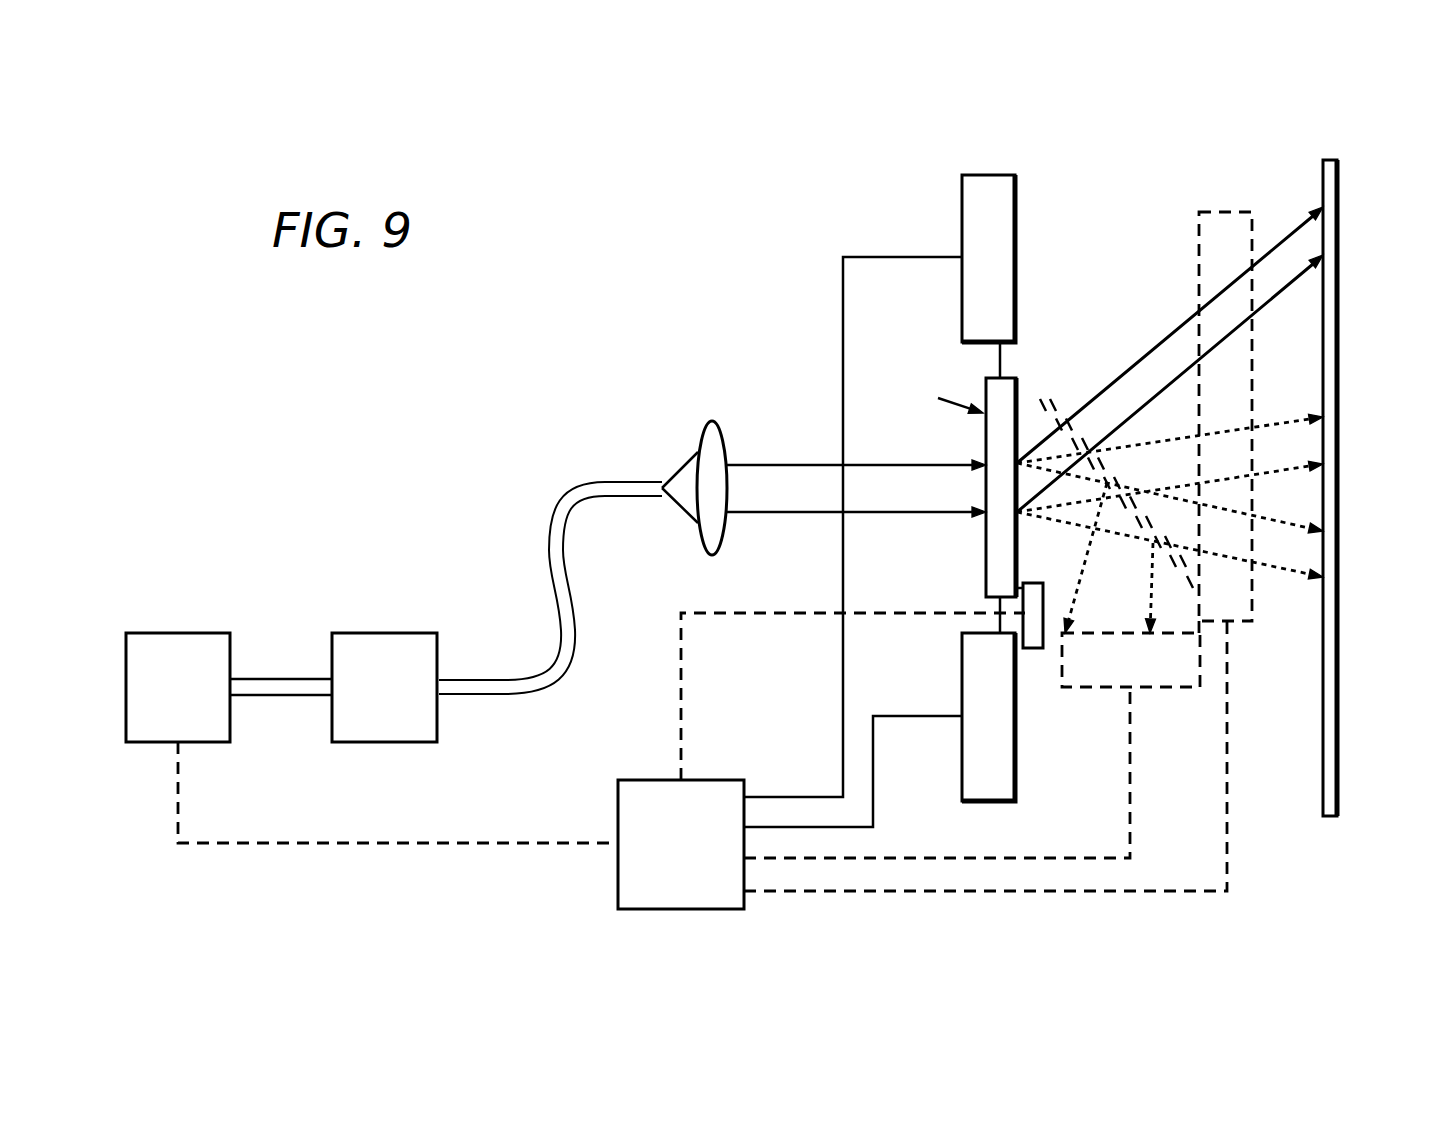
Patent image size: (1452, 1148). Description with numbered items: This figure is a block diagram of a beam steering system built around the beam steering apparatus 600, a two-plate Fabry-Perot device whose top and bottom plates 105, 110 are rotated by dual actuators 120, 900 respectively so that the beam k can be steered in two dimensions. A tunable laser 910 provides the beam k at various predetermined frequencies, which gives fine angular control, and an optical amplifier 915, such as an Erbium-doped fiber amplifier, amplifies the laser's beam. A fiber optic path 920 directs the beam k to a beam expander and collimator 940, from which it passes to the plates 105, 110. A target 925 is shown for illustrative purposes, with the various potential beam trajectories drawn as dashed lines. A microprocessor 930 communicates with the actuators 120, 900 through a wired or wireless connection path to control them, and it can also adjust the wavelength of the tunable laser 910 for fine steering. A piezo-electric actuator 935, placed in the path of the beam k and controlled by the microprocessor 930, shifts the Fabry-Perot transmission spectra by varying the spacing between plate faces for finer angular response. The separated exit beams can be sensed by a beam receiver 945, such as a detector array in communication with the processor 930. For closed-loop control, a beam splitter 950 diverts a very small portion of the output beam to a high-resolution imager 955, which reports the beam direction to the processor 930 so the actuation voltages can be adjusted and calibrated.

The top plate 105 is at (1016, 390).
The bottom plate 110 is at (986, 392).
The actuator 120 is at (962, 217).
The beam steering apparatus 600 is at (1030, 214).
The actuator 900 is at (962, 688).
The tunable laser 910 is at (186, 633).
The optical amplifier 915 is at (400, 633).
The fiber optic path 920 is at (548, 516).
The target 925 is at (1337, 700).
The microprocessor 930 is at (618, 802).
The piezo-electric actuator 935 is at (1033, 648).
The beam expander and collimator 940 is at (712, 421).
The beam receiver 945 is at (1240, 212).
The beam splitter 950 is at (1050, 400).
The high-resolution imager 955 is at (1150, 688).
The beam k is at (803, 513).